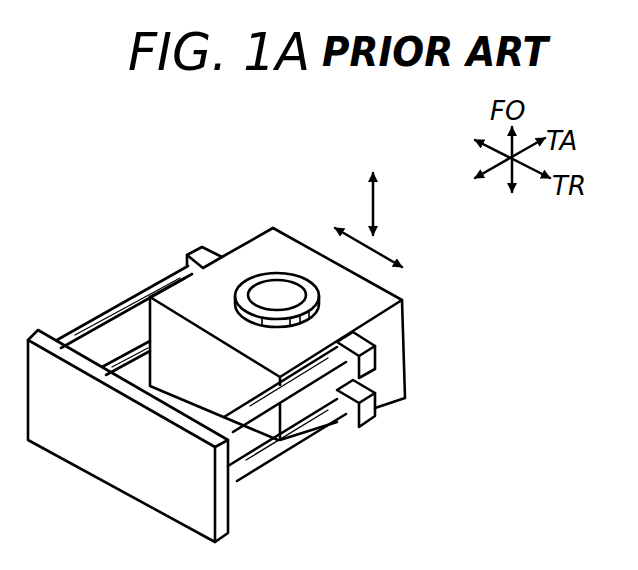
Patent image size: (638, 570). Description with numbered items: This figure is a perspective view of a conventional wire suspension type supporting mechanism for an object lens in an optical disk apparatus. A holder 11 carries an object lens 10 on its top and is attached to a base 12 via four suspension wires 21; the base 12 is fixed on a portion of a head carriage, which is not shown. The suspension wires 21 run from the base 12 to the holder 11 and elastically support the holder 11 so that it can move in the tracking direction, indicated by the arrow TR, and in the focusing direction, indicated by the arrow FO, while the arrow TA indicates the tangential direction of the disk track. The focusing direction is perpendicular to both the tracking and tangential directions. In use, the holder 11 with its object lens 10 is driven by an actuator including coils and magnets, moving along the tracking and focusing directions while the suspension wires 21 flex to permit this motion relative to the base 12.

The object lens 10 is at (265, 294).
The holder 11 is at (358, 303).
The base 12 is at (130, 458).
The suspension wires 21 is at (130, 355).